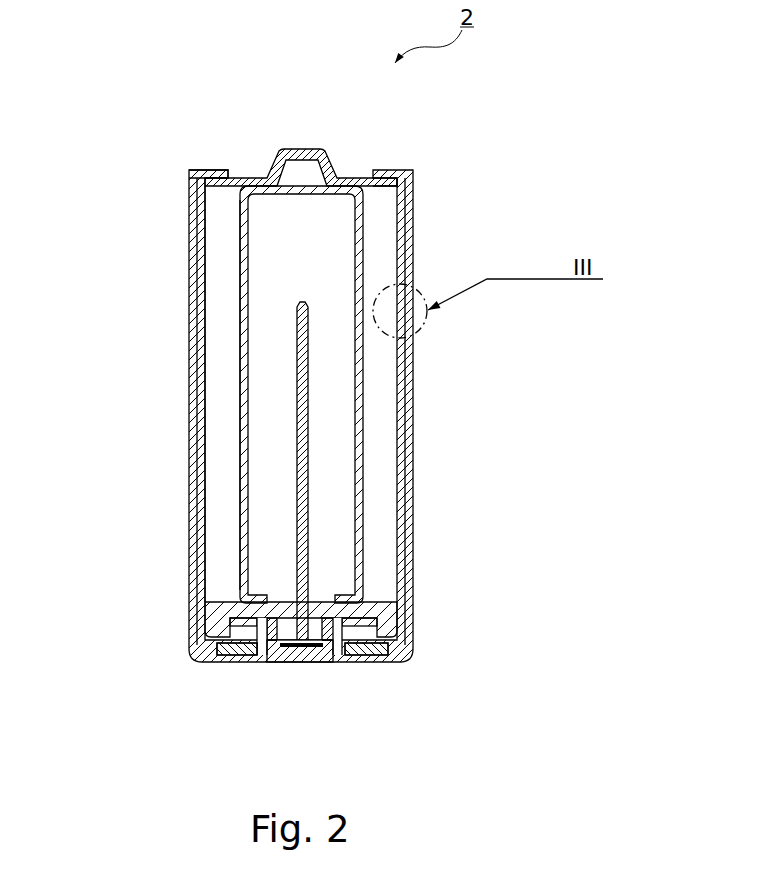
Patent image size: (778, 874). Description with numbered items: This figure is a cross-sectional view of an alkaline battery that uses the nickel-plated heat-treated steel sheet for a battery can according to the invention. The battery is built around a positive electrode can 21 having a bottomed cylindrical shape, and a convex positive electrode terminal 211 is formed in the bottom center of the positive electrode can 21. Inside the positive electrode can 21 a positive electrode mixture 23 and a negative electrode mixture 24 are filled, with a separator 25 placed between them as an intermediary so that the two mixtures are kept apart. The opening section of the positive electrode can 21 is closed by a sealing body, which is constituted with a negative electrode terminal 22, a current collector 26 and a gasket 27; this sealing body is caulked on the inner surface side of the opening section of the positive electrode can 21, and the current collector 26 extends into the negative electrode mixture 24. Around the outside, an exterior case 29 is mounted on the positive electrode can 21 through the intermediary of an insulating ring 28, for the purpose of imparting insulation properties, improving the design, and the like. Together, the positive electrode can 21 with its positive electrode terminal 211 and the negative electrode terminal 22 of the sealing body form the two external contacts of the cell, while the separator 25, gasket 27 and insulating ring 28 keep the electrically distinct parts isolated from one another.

The positive electrode can 21 is at (415, 222).
The positive electrode terminal 211 is at (333, 162).
The negative electrode terminal 22 is at (304, 663).
The positive electrode mixture 23 is at (222, 302).
The negative electrode mixture 24 is at (265, 533).
The separator 25 is at (235, 399).
The current collector 26 is at (308, 364).
The gasket 27 is at (373, 602).
The insulating ring 28 is at (212, 662).
The exterior case 29 is at (188, 197).